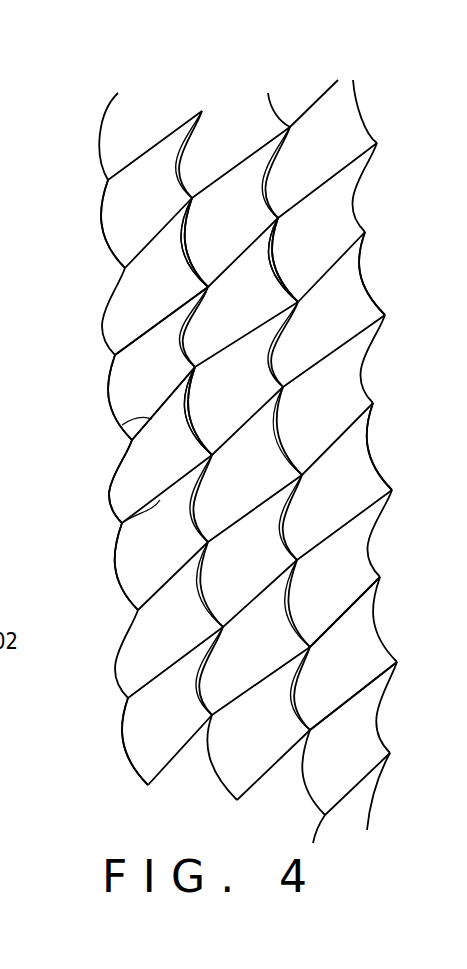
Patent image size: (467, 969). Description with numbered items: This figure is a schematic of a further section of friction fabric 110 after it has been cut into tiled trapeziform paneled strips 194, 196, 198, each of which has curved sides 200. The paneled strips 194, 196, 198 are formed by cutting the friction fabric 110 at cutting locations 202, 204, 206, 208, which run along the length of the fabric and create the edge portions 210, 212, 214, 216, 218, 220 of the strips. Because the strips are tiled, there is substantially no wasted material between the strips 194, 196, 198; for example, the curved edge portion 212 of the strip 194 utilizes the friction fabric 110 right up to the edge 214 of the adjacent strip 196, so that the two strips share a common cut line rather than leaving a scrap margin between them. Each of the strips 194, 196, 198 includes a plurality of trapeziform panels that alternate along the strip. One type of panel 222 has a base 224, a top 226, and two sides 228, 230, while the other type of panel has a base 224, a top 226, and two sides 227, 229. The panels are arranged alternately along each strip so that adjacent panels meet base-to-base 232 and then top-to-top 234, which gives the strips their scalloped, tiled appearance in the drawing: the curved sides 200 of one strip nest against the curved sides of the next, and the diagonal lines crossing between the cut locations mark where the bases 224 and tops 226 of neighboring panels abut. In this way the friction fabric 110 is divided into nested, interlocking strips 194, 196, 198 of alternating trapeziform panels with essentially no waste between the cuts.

The friction fabric 110 is at (148, 786).
The paneled strip 194 is at (186, 790).
The paneled strip 196 is at (276, 801).
The paneled strip 198 is at (361, 832).
The curved sides 200 is at (108, 565).
The cutting location 202 is at (124, 78).
The cutting location 204 is at (210, 89).
The cutting location 206 is at (283, 80).
The cutting location 208 is at (353, 58).
The edge portion 210 is at (102, 207).
The curved edge portion 212 is at (182, 227).
The edge portion 214 is at (194, 264).
The edge portion 216 is at (277, 243).
The edge portion 218 is at (283, 274).
The edge portion 220 is at (369, 292).
The trapeziform panel 222 is at (147, 375).
The base 224 is at (148, 331).
The top 226 is at (122, 425).
The side 227 is at (193, 432).
The side 228 is at (193, 368).
The side 229 is at (109, 500).
The side 230 is at (111, 367).
The base-to-base arrangement 232 is at (355, 690).
The top-to-top arrangement 234 is at (357, 598).